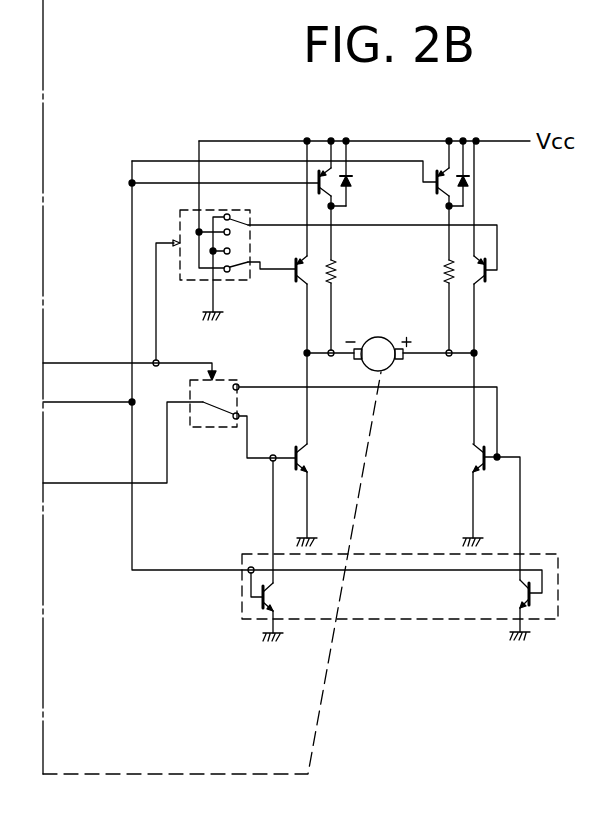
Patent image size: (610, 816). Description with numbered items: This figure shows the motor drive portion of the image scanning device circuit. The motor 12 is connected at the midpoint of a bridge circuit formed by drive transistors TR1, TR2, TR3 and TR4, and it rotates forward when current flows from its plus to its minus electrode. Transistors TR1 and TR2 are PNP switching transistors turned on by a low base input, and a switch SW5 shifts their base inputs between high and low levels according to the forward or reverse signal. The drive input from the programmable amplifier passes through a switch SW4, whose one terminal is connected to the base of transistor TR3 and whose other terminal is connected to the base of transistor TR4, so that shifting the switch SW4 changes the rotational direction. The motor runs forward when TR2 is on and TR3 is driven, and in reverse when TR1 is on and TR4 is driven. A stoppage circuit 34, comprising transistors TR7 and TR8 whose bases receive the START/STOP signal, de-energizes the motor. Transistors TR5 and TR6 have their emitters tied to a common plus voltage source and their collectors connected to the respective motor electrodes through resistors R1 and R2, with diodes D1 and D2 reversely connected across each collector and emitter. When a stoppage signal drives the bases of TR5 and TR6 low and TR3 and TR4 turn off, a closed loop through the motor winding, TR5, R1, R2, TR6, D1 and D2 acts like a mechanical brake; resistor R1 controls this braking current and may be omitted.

The motor 12 is at (377, 337).
The stoppage circuit 34 is at (400, 617).
The drive transistor TR1 is at (301, 284).
The drive transistor TR2 is at (481, 284).
The transistor for driving the motor TR3 is at (300, 456).
The transistor TR4 is at (480, 458).
The transistor TR5 is at (324, 187).
The transistor TR6 is at (443, 187).
The transistor TR7 is at (268, 595).
The transistor TR8 is at (527, 595).
The diode D1 is at (352, 181).
The diode D2 is at (469, 181).
The resistor R1 is at (338, 268).
The resistor R2 is at (444, 268).
The switch SW4 is at (210, 427).
The switch SW5 is at (187, 280).